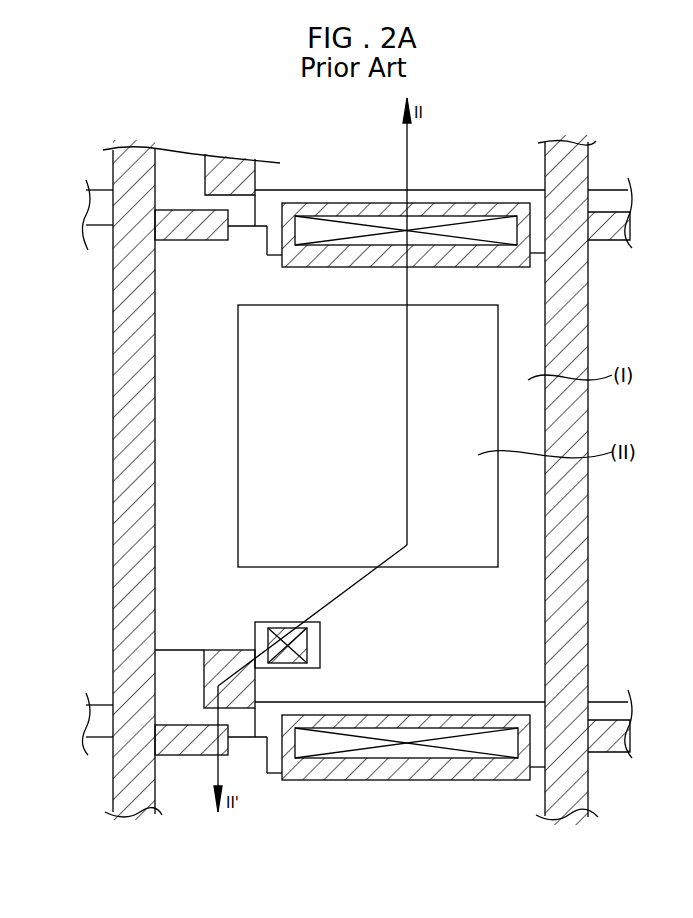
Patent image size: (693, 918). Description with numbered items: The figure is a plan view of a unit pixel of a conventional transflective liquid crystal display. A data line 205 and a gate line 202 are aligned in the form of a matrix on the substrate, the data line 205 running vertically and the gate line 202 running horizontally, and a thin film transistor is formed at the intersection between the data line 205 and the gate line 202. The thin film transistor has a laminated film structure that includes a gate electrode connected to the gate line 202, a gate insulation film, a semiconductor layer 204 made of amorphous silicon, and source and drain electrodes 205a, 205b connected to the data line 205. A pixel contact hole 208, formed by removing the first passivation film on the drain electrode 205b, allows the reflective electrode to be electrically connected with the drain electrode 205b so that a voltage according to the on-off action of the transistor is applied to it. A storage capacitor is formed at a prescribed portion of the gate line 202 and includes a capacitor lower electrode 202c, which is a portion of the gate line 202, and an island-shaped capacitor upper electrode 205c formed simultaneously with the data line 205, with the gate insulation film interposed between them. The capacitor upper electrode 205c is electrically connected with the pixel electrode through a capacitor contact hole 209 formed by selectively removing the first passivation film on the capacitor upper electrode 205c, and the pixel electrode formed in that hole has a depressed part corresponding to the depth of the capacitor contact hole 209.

The gate line 202 is at (95, 218).
The semiconductor layer 204 is at (180, 665).
The data line 205 is at (152, 423).
The source electrode 205a is at (188, 757).
The drain electrode 205b is at (255, 685).
The capacitor upper electrode 205c is at (470, 780).
The pixel contact hole 208 is at (320, 655).
The capacitor contact hole 209 is at (440, 730).
The capacitor lower electrode 202c is at (267, 765).